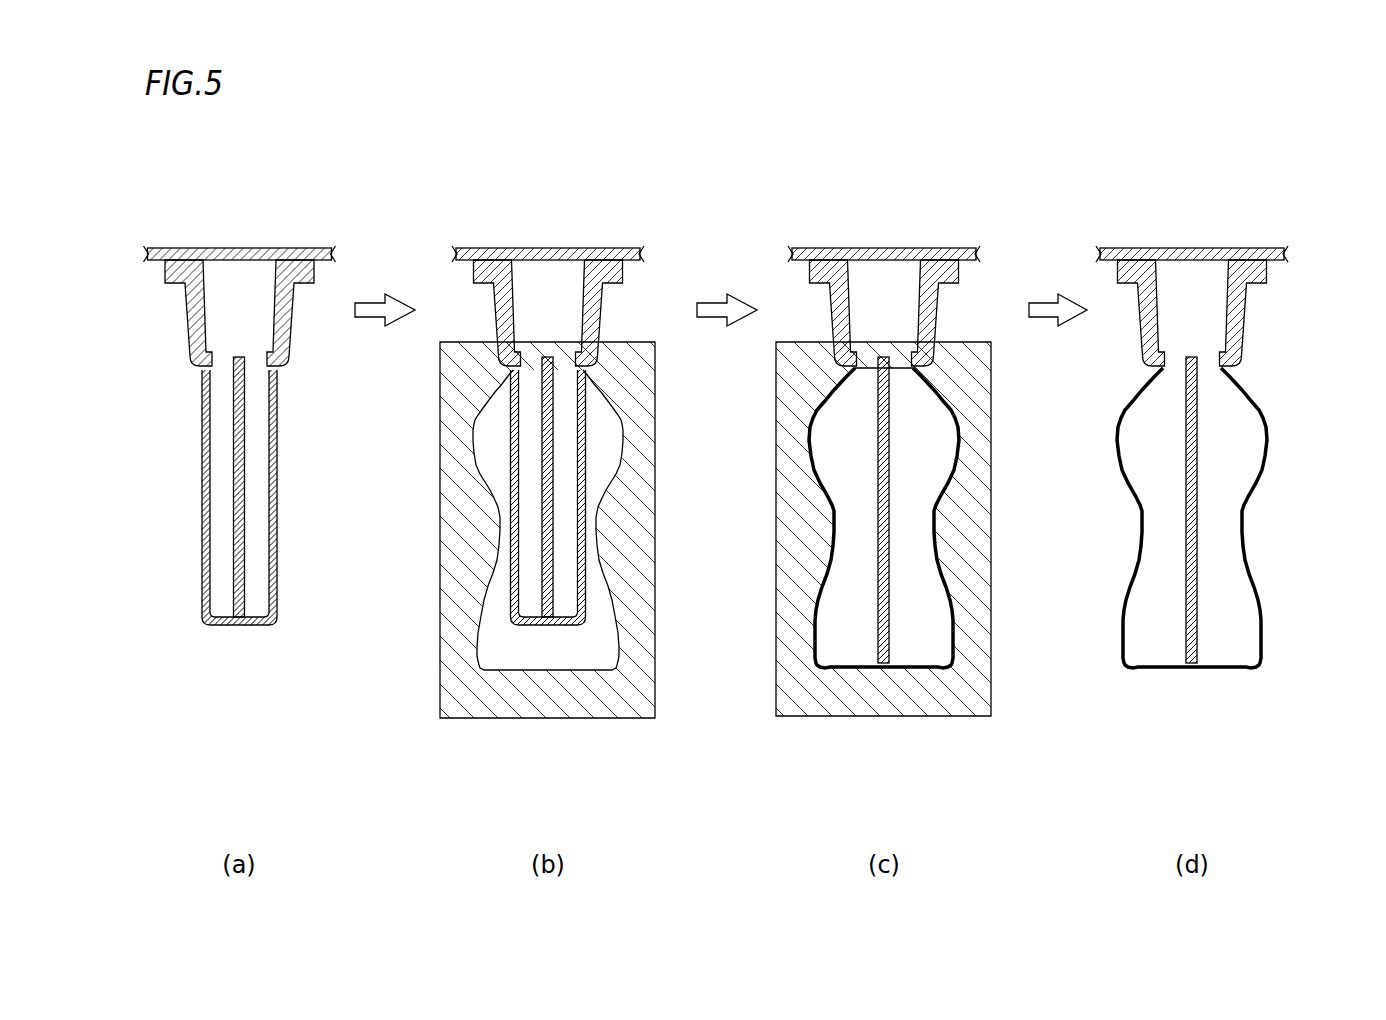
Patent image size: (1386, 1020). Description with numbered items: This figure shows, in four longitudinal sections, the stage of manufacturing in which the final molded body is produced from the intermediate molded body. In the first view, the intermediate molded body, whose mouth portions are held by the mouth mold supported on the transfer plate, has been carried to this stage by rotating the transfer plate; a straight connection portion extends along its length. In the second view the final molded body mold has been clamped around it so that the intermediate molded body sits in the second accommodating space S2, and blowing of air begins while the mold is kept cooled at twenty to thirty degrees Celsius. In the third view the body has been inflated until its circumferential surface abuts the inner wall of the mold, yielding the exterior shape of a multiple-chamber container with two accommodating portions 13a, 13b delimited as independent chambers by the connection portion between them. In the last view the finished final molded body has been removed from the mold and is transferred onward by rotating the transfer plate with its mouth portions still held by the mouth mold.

The accommodating portion 13a is at (786, 493).
The accommodating portion 13b is at (978, 520).
The second accommodating space S2 is at (439, 466).